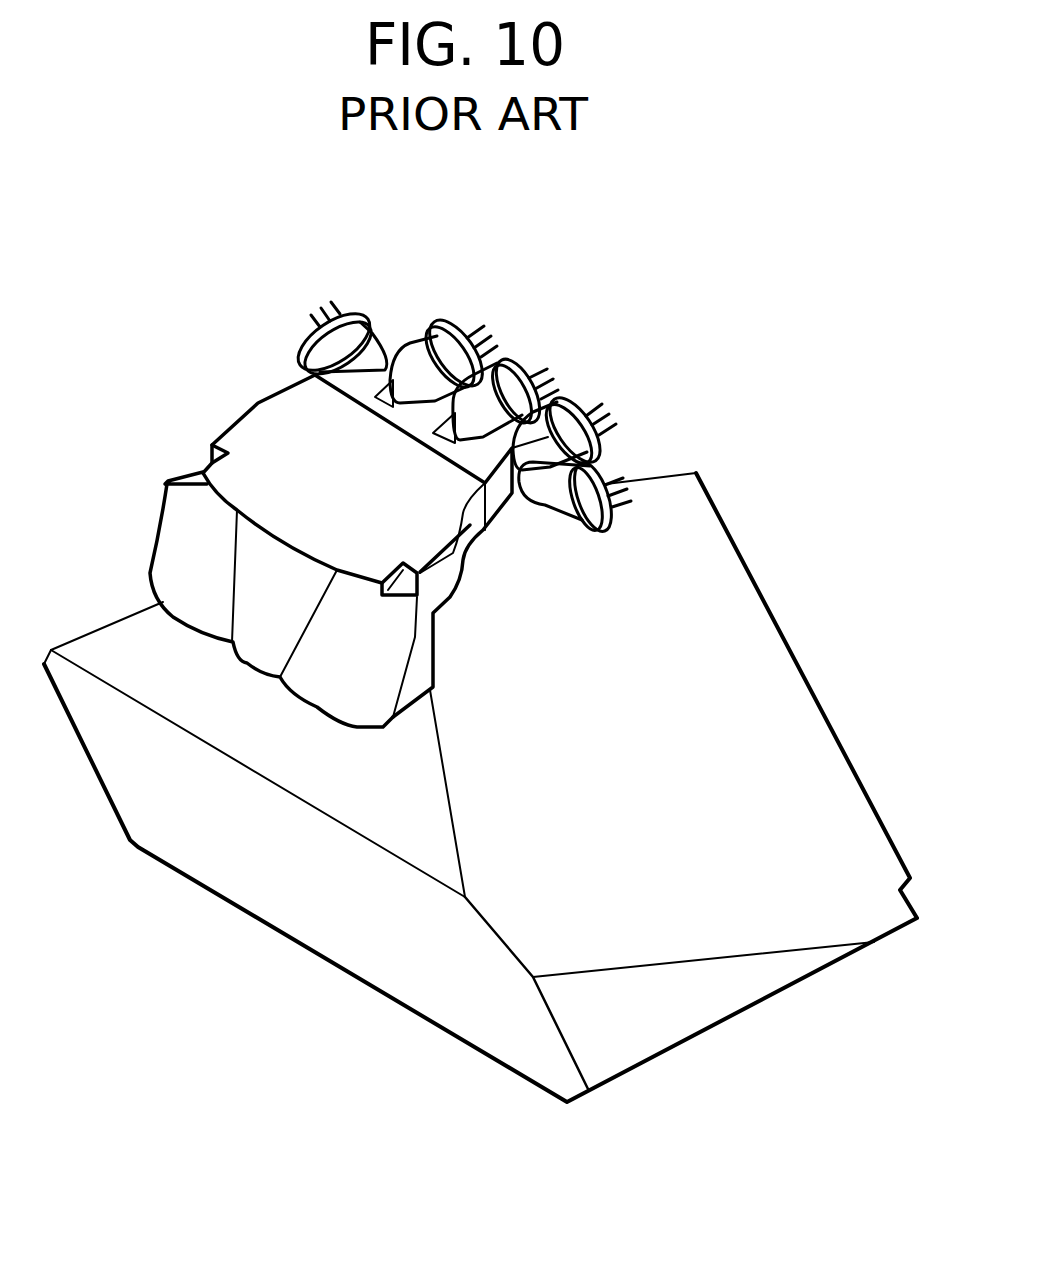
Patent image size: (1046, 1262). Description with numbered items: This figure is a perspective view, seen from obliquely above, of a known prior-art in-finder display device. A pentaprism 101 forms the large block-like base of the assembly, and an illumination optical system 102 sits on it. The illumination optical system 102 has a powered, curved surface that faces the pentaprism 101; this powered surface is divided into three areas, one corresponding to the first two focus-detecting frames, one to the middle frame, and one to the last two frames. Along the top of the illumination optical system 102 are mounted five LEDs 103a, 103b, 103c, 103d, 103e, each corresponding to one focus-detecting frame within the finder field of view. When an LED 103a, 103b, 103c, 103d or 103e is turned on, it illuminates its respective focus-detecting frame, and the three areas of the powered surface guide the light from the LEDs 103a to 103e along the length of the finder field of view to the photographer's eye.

The pentaprism 101 is at (318, 922).
The illumination optical system 102 is at (243, 410).
The LED 103a is at (337, 343).
The LED 103b is at (423, 350).
The LED 103c is at (503, 387).
The LED 103d is at (560, 427).
The LED 103e is at (613, 470).